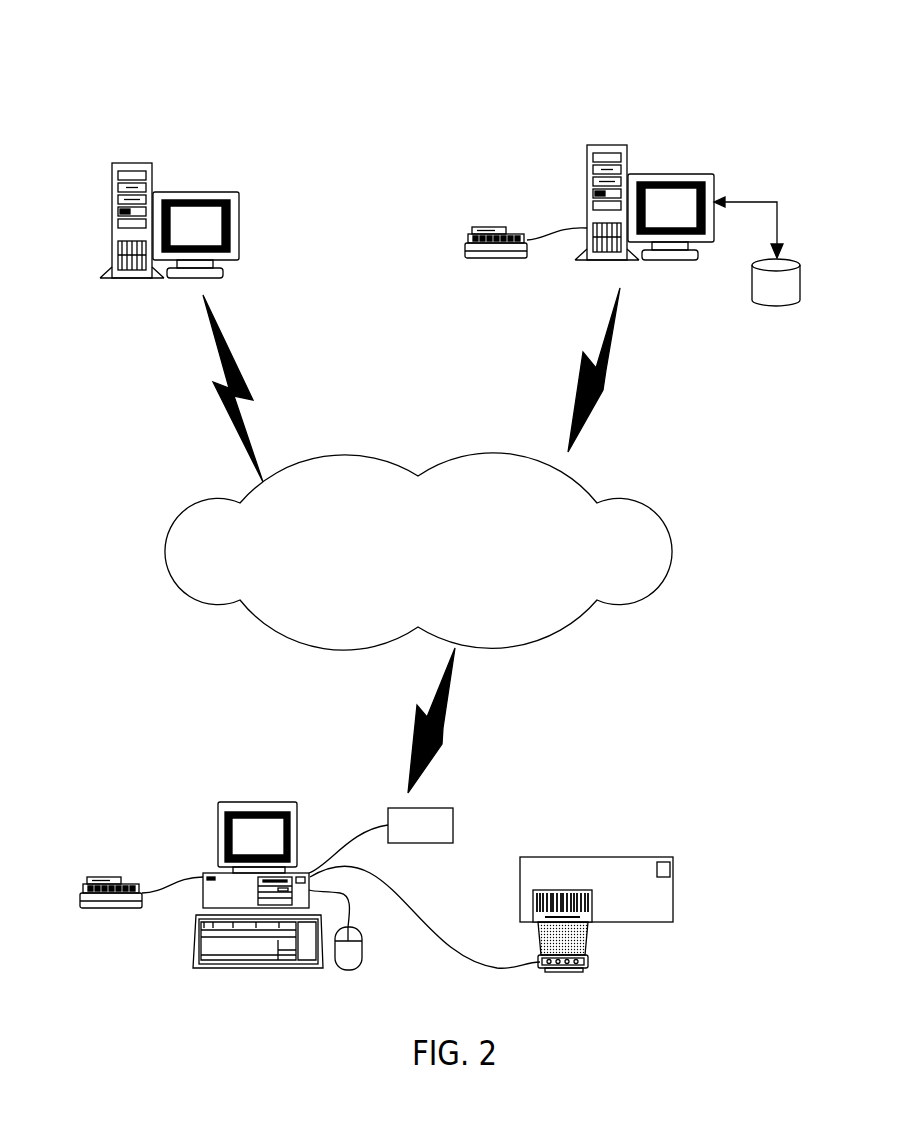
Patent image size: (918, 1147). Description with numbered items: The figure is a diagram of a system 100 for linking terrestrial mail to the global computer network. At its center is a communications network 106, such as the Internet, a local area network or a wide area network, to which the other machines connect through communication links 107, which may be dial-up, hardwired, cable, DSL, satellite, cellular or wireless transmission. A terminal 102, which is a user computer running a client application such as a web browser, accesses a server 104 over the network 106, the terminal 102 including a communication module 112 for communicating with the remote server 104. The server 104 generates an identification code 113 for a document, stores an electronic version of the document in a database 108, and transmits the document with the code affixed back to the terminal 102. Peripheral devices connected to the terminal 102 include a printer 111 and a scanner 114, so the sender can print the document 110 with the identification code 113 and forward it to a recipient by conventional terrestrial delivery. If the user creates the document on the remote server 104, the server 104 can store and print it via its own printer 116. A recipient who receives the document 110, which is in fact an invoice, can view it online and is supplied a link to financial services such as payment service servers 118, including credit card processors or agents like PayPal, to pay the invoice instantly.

The system 100 is at (429, 126).
The terminal 102 is at (207, 872).
The server 104 is at (587, 207).
The communications network 106 is at (672, 553).
The communication link 107 is at (214, 382).
The database 108 is at (800, 283).
The document 110 is at (674, 887).
The printer 111 is at (82, 892).
The communication module 112 is at (453, 822).
The identification code 113 is at (590, 904).
The scanner 114 is at (588, 960).
The printer 116 is at (465, 244).
The payment service servers 118 is at (131, 279).